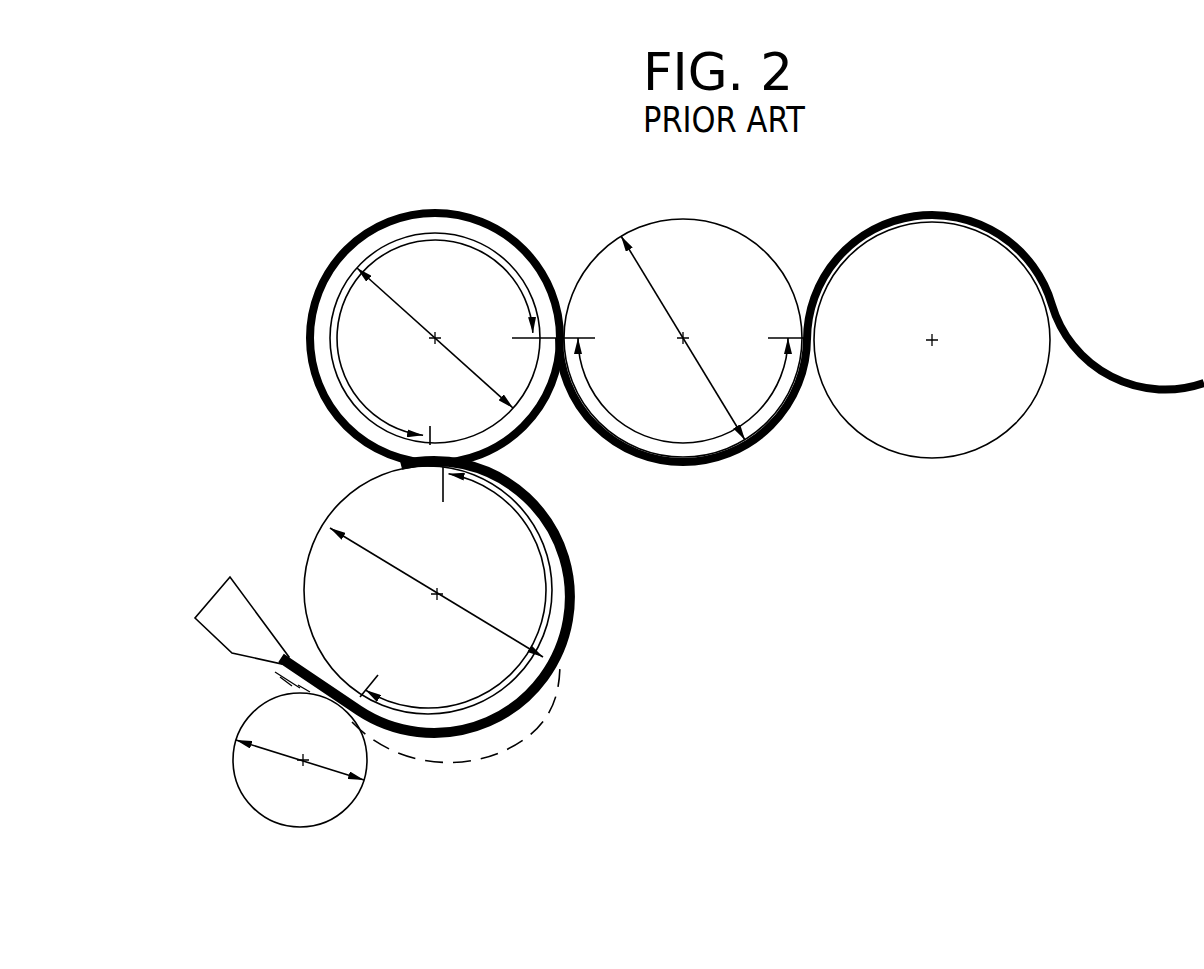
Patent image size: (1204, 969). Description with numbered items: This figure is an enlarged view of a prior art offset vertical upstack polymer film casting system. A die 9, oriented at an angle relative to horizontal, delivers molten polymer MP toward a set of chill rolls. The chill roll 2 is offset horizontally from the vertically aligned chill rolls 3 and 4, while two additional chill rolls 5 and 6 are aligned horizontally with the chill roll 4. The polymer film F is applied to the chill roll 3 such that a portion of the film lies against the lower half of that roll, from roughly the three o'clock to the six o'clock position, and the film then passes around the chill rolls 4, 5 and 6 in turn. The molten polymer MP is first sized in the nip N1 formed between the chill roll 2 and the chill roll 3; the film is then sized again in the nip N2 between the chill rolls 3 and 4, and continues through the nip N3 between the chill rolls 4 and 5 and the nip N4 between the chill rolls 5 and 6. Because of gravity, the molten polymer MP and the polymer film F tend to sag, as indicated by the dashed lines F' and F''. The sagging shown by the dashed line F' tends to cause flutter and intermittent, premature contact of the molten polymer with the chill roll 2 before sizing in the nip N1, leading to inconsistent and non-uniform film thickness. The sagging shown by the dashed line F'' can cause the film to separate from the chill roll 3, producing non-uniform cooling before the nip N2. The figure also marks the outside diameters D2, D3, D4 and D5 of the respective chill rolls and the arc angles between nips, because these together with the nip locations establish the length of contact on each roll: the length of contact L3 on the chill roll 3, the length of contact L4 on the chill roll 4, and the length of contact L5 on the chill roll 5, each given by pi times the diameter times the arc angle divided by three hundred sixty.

The chill roll 2 is at (304, 812).
The chill roll 3 is at (365, 505).
The chill roll 4 is at (524, 398).
The chill roll 5 is at (693, 243).
The chill roll 6 is at (963, 427).
The die 9 is at (227, 602).
The nip N1 is at (353, 688).
The nip N2 is at (453, 447).
The nip N3 is at (564, 323).
The nip N4 is at (813, 337).
The outside diameter of chill roll 2 D2 is at (333, 775).
The outside diameter of chill roll 3 D3 is at (500, 624).
The outside diameter of chill roll 4 D4 is at (404, 309).
The outside diameter of chill roll 5 D5 is at (710, 381).
The length of contact L3 is at (475, 712).
The length of contact L4 is at (431, 337).
The length of contact L5 is at (678, 442).
The polymer film F is at (742, 473).
The dashed line indicating sagging molten polymer F' is at (246, 697).
The dashed line indicating sagging polymer film F'' is at (475, 719).
The molten polymer MP is at (298, 667).